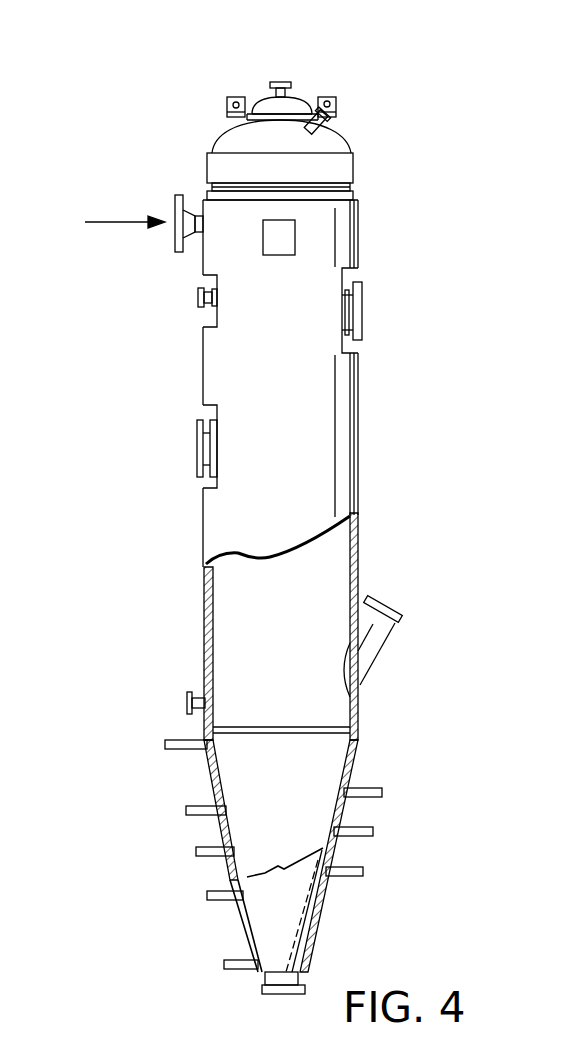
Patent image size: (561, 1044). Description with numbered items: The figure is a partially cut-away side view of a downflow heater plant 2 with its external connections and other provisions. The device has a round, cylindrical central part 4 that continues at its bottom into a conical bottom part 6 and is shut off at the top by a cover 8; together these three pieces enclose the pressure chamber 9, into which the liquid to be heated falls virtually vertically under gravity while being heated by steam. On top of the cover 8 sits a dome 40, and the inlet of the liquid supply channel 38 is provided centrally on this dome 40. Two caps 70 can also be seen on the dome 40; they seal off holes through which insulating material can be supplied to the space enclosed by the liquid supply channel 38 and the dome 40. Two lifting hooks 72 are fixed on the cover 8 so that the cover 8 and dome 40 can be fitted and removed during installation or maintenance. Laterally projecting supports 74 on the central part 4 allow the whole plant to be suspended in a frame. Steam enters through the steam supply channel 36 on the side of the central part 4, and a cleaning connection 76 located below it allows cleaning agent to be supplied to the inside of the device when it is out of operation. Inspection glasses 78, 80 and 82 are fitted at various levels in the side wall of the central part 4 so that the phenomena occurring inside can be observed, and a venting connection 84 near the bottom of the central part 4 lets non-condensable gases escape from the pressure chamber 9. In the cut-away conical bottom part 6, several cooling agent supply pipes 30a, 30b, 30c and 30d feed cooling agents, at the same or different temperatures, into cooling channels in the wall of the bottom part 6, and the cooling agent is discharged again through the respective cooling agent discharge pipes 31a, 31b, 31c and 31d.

The downflow heater device 2 is at (372, 393).
The central part 4 is at (203, 540).
The bottom part 6 is at (358, 748).
The cover 8 is at (332, 141).
The pressure chamber 9 is at (292, 673).
The steam supply channel 36 is at (196, 240).
The liquid supply channel 38 is at (281, 82).
The dome 40 is at (228, 100).
The caps 70 is at (260, 97).
The lifting hooks 72 is at (222, 111).
The supports 74 is at (285, 237).
The cleaning connection 76 is at (197, 298).
The inspection glass 78 is at (363, 308).
The inspection glass 80 is at (197, 452).
The inspection glass 82 is at (379, 615).
The venting connection 84 is at (187, 698).
The cooling agent supply pipe 30a is at (225, 965).
The cooling agent supply pipe 30b is at (363, 873).
The cooling agent supply pipe 30c is at (373, 832).
The cooling agent supply pipe 30d is at (382, 791).
The cooling agent discharge pipe 31a is at (208, 896).
The cooling agent discharge pipe 31b is at (197, 853).
The cooling agent discharge pipe 31c is at (187, 813).
The cooling agent discharge pipe 31d is at (166, 745).